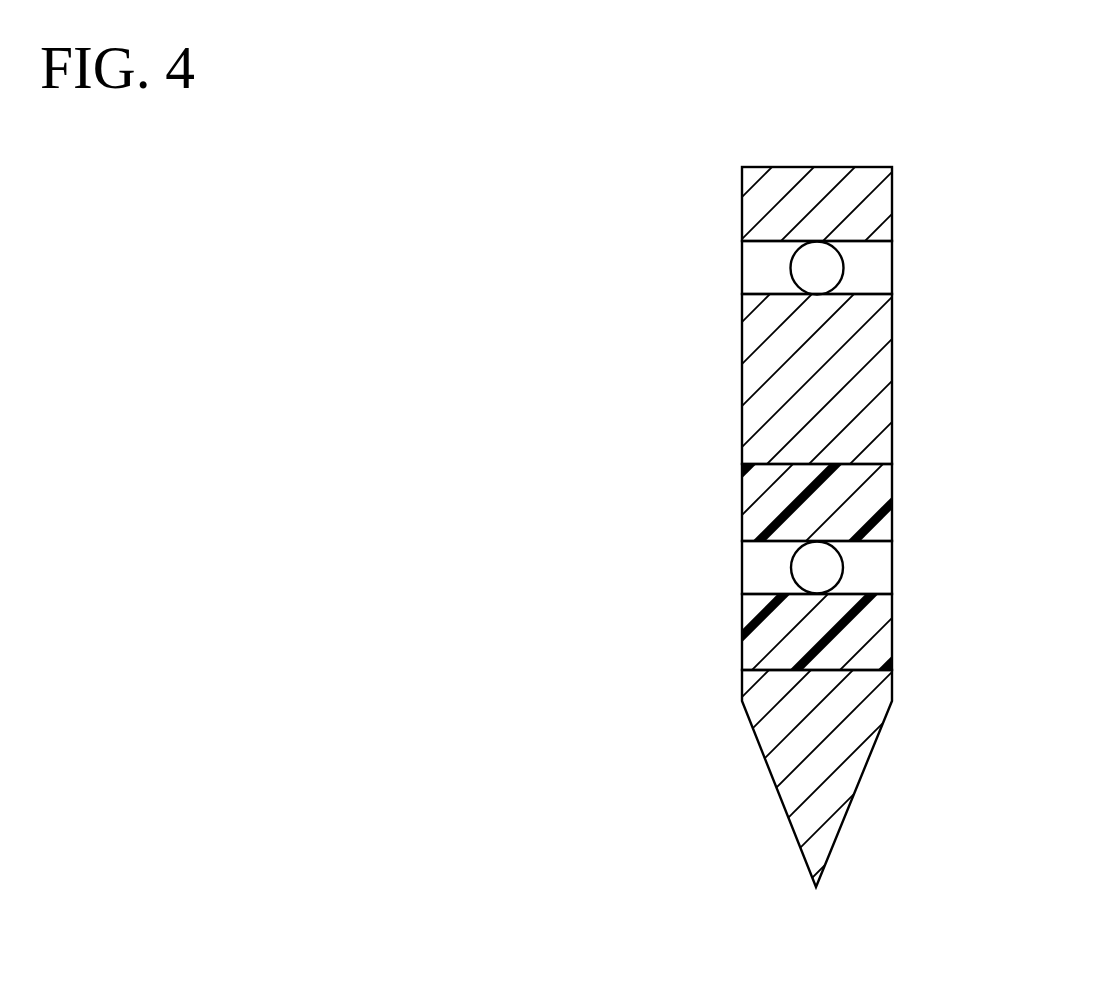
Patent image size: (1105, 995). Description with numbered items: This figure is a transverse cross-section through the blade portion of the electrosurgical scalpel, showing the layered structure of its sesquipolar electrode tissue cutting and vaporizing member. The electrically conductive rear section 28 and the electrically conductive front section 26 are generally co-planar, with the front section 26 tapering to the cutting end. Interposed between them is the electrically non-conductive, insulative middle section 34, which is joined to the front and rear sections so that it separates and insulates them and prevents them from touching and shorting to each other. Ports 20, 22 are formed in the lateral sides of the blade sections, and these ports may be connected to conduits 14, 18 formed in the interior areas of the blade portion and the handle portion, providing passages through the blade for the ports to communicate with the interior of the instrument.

The conduit 14 is at (803, 558).
The conduit 18 is at (818, 267).
The port 20 is at (753, 581).
The port 22 is at (757, 258).
The front section 26 is at (855, 793).
The rear section 28 is at (892, 187).
The insulative middle section 34 is at (883, 518).